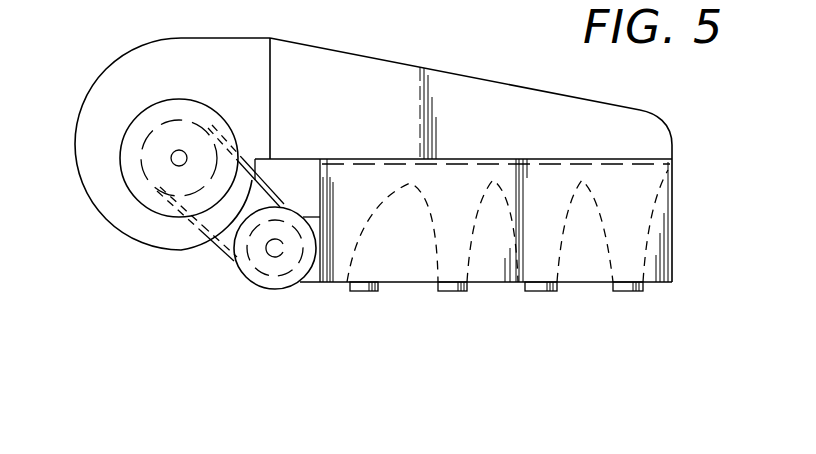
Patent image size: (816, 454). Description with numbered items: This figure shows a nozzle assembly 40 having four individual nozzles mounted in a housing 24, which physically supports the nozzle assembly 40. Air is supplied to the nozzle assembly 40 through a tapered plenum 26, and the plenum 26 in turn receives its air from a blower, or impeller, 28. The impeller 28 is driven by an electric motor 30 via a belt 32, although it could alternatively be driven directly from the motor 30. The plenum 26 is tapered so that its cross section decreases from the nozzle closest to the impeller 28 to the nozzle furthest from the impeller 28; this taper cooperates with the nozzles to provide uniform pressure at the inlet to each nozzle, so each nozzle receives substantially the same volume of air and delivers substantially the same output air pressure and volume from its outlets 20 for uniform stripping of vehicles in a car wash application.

The outlets 20 is at (448, 292).
The housing 24 is at (657, 257).
The tapered plenum 26 is at (383, 73).
The blower or impeller 28 is at (90, 182).
The electric motor 30 is at (265, 289).
The belt 32 is at (220, 249).
The nozzle assembly 40 is at (675, 168).